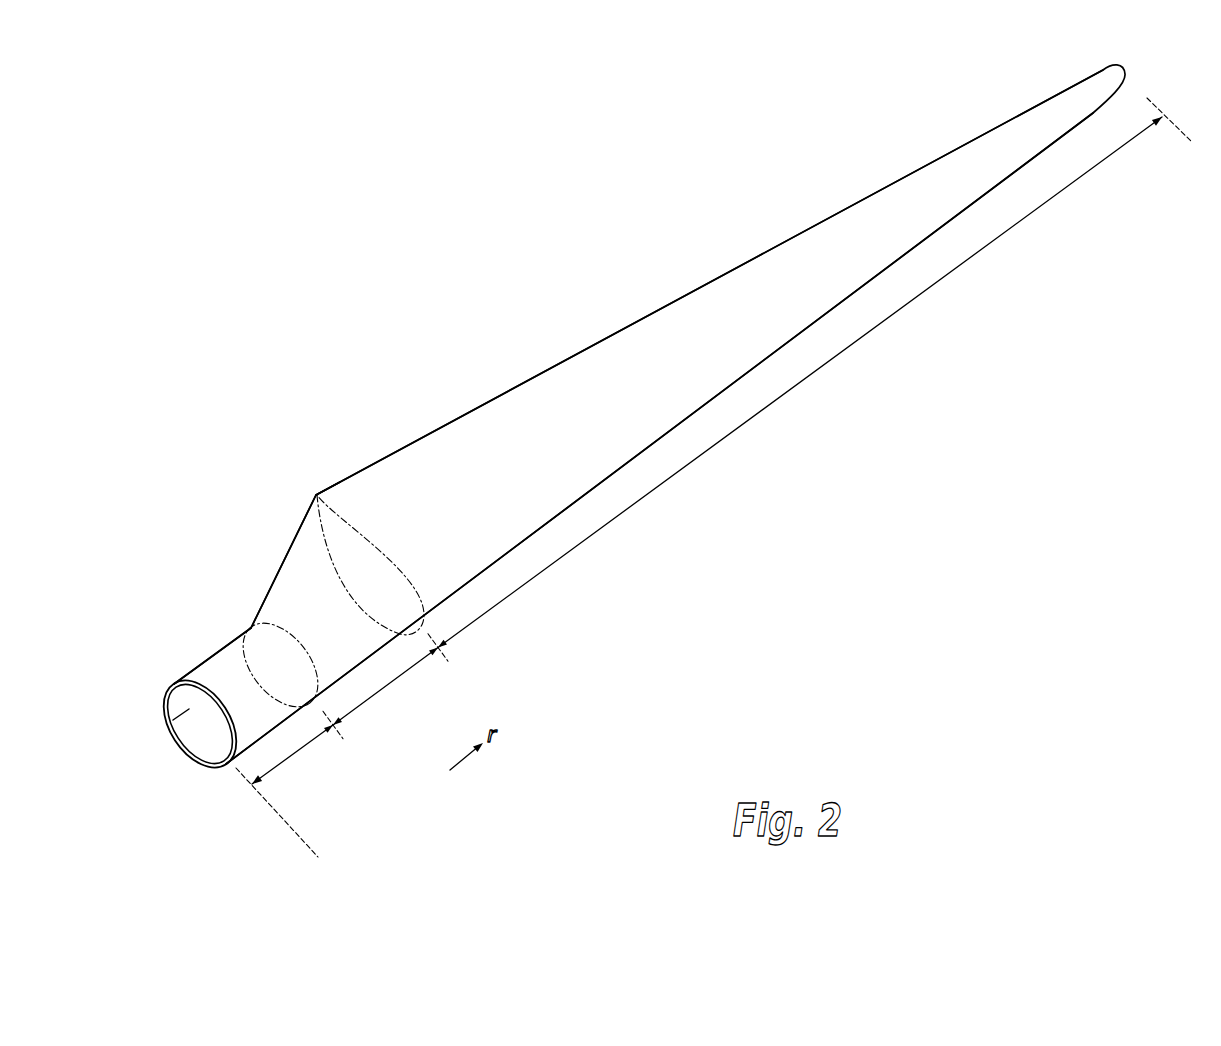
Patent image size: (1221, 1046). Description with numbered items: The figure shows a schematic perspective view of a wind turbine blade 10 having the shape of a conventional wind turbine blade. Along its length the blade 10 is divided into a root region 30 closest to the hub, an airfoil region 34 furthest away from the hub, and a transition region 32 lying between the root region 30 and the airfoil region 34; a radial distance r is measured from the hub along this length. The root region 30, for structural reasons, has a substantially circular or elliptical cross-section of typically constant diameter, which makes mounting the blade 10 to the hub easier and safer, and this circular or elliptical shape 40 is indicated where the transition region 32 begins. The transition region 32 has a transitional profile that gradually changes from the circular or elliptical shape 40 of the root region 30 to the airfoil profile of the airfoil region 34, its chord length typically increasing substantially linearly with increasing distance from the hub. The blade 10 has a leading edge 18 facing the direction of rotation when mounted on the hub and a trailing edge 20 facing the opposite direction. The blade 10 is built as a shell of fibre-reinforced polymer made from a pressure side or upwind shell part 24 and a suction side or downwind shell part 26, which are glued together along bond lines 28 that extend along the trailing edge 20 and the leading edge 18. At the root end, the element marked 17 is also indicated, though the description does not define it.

The wind turbine blade 10 is at (474, 286).
The root end face / inner root surface 17 is at (165, 722).
The leading edge 18 is at (833, 312).
The trailing edge 20 is at (703, 280).
The pressure side or upwind shell part 24 is at (185, 678).
The suction side or downwind shell part 26 is at (208, 766).
The bond lines 28 is at (188, 682).
The root region 30 is at (295, 758).
The transition region 32 is at (390, 688).
The airfoil region 34 is at (728, 435).
The circular or elliptical shape 40 is at (318, 495).